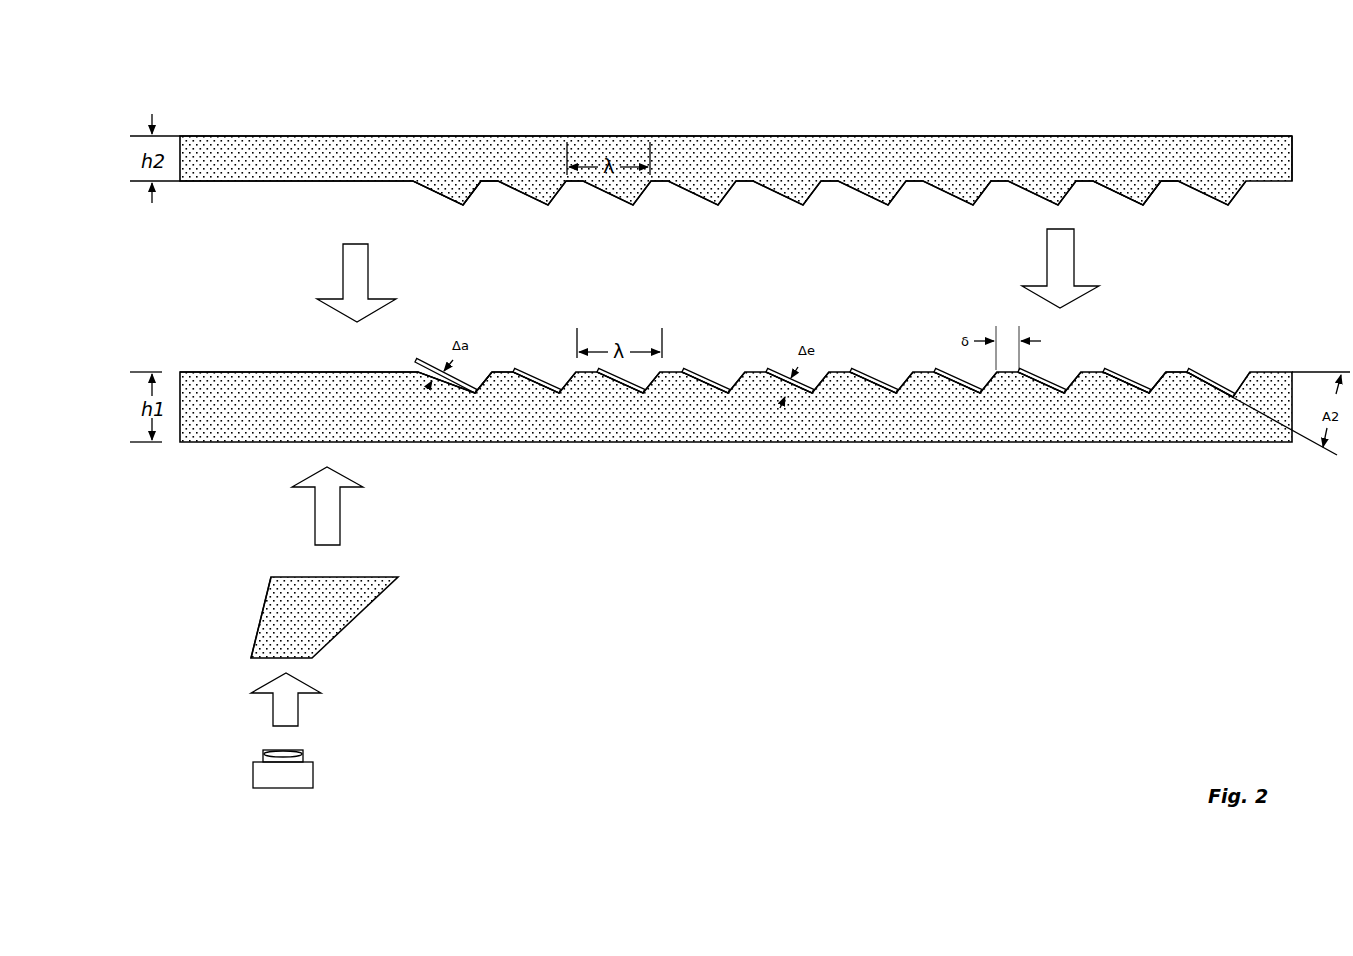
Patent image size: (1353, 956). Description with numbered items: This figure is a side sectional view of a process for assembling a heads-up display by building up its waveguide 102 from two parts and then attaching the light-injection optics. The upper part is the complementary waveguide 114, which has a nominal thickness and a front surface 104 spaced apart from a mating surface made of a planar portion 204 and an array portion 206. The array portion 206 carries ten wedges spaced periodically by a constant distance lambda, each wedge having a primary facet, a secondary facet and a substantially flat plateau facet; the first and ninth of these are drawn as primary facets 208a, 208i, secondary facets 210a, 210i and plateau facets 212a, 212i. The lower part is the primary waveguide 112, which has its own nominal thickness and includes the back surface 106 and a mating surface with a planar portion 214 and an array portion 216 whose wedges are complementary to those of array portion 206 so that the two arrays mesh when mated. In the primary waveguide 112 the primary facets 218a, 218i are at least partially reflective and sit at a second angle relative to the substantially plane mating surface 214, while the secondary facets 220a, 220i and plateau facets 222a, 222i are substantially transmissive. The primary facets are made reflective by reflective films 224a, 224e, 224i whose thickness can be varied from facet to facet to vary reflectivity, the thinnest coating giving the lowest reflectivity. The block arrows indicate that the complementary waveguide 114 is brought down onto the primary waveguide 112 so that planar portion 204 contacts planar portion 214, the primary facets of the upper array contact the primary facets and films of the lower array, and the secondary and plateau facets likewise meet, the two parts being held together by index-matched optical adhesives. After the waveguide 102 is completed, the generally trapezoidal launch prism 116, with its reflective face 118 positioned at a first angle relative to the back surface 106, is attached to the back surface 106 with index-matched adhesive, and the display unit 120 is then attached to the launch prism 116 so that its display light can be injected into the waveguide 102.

The waveguide 102 is at (818, 122).
The front surface 104 is at (266, 136).
The back surface 106 is at (612, 442).
The primary waveguide 112 is at (1298, 452).
The complementary waveguide 114 is at (1291, 132).
The launch prism 116 is at (392, 585).
The reflective face 118 is at (259, 613).
The display unit 120 is at (310, 788).
The planar portion of mating surface 204 is at (357, 182).
The array portion 206 is at (918, 212).
The primary facet 208a is at (437, 192).
The primary facet 208i is at (1112, 190).
The secondary facet 210a is at (473, 193).
The secondary facet 210i is at (1152, 194).
The plateau facet 212a is at (494, 181).
The plateau facet 212i is at (1173, 181).
The planar portion of mating surface 214 is at (290, 372).
The array portion 216 is at (918, 364).
The primary facet 218a is at (447, 387).
The primary facet 218i is at (1118, 385).
The secondary facet 220a is at (485, 375).
The secondary facet 220i is at (1163, 372).
The plateau facet 222a is at (503, 373).
The plateau facet 222i is at (1177, 372).
The reflective film 224a is at (450, 383).
The reflective film 224e is at (767, 371).
The reflective film 224i is at (1126, 382).